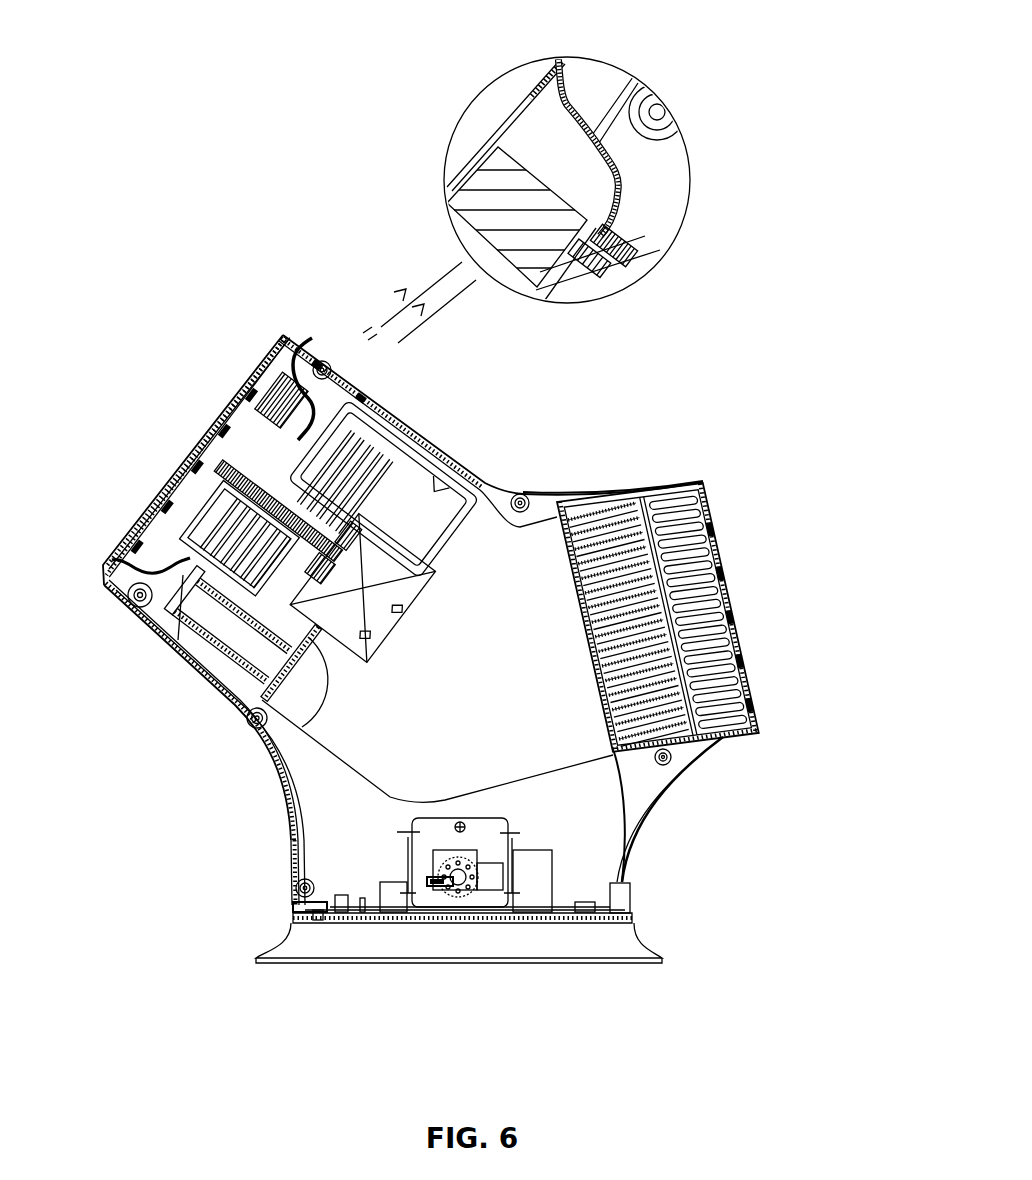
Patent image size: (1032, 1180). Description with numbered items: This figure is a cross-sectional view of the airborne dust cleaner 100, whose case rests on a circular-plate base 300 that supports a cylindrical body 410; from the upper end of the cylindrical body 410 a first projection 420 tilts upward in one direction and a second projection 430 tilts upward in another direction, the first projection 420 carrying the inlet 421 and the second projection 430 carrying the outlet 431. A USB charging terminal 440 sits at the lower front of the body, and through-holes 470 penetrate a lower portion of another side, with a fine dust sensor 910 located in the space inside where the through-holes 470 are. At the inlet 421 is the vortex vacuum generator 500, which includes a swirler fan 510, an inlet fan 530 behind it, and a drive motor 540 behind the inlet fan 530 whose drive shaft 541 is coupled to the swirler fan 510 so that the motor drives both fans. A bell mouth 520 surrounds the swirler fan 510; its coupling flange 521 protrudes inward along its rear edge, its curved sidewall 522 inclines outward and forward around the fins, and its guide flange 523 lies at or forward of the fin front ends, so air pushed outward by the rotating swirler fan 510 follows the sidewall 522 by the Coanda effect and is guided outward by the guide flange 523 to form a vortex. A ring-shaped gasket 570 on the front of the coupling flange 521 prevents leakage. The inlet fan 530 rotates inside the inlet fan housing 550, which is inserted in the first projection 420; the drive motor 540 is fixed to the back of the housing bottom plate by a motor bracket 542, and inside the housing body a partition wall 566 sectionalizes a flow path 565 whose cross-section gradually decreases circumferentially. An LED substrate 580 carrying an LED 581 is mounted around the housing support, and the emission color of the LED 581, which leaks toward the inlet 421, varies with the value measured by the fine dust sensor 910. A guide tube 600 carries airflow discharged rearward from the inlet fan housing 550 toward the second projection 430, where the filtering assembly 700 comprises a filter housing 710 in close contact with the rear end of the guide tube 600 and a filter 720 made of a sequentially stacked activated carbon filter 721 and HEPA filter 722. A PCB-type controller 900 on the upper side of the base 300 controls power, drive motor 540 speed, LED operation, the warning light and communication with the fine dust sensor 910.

The airborne dust cleaner 100 is at (62, 281).
The base 300 is at (640, 940).
The cylindrical body 410 is at (287, 847).
The first projection 420 is at (205, 688).
The inlet 421 is at (213, 463).
The second projection 430 is at (713, 743).
The outlet 431 is at (705, 520).
The USB charging terminal 440 is at (290, 903).
The through-holes 470 is at (452, 895).
The vortex vacuum generator 500 is at (320, 374).
The swirler fan 510 is at (277, 402).
The bell mouth 520 is at (545, 107).
The coupling flange 521 is at (605, 216).
The sidewall 522 is at (607, 138).
The guide flange 523 is at (548, 76).
The inlet fan 530 is at (350, 477).
The drive motor 540 is at (410, 567).
The drive shaft 541 is at (222, 518).
The motor bracket 542 is at (333, 717).
The inlet fan housing 550 is at (215, 703).
The flow path 565 is at (440, 487).
The partition wall 566 is at (420, 473).
The gasket 570 is at (607, 235).
The LED substrate 580 is at (184, 622).
The LED 581 is at (188, 583).
The guide tube 600 is at (333, 760).
The filtering assembly 700 is at (600, 528).
The filter housing 710 is at (635, 763).
The filter 720 is at (807, 543).
The activated carbon filter 721 is at (637, 678).
The HEPA filter 722 is at (687, 573).
The controller 900 is at (385, 918).
The fine dust sensor 910 is at (493, 893).